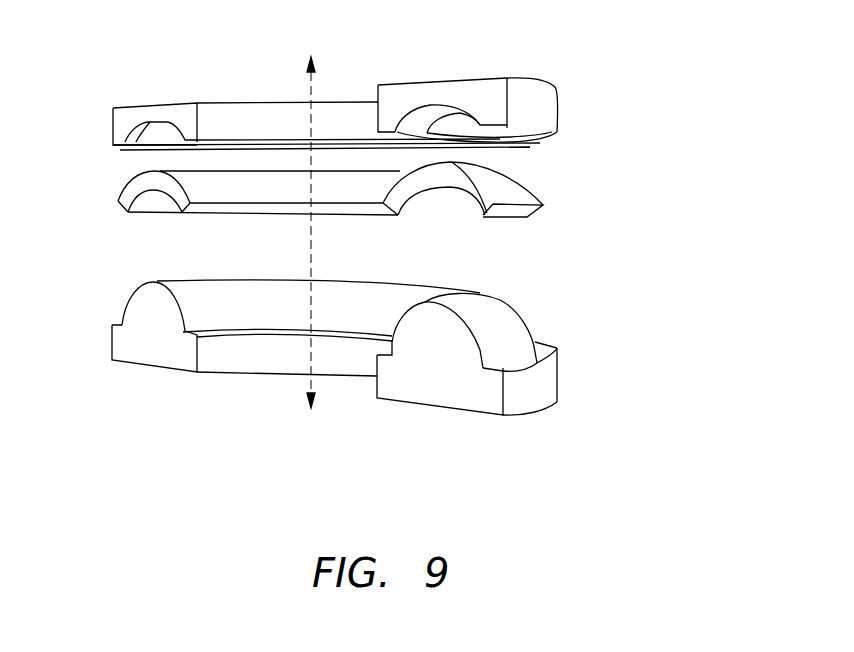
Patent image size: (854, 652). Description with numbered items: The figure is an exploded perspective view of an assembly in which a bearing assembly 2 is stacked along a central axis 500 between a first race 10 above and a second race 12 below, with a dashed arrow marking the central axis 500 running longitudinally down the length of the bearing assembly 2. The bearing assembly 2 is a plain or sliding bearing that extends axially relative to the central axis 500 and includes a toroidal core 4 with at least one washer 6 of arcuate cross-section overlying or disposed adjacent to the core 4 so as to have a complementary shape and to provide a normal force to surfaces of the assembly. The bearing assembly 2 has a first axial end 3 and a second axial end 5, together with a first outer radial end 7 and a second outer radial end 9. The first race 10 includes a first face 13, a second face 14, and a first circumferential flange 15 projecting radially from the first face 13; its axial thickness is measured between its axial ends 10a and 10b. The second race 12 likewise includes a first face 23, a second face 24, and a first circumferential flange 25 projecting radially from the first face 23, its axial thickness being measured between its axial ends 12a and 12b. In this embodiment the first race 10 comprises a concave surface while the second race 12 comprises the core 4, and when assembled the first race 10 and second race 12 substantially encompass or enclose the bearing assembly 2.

The bearing assembly 2 is at (351, 115).
The first axial end 3 is at (490, 77).
The core 4 is at (538, 338).
The second axial end 5 is at (430, 412).
The washer 6 is at (545, 206).
The first outer radial end 7 is at (112, 326).
The second outer radial end 9 is at (560, 365).
The first race 10 is at (550, 87).
The axial end of first race 10a is at (512, 77).
The axial end of first race 10b is at (549, 140).
The second race 12 is at (557, 349).
The axial end of second race 12a is at (482, 294).
The axial end of second race 12b is at (538, 412).
The first face 13 is at (150, 123).
The second face 14 is at (147, 105).
The first circumferential flange 15 is at (126, 142).
The first face 23 is at (447, 302).
The second face 24 is at (152, 372).
The first circumferential flange 25 is at (122, 325).
The central axis 500 is at (270, 223).